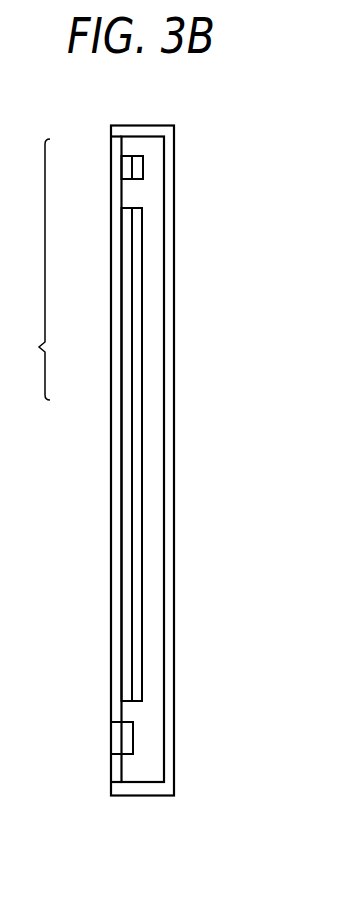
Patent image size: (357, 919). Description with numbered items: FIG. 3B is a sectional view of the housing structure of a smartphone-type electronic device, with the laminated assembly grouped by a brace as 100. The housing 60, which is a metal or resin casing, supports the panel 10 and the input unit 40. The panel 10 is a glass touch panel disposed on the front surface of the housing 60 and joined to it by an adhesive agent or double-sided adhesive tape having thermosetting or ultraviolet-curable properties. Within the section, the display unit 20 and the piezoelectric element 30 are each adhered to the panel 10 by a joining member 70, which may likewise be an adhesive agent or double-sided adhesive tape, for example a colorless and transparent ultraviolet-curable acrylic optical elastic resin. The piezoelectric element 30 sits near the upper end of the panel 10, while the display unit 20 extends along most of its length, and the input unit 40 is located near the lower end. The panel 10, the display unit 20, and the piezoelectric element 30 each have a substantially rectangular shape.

The display device assembly 100 is at (25, 269).
The panel 10 is at (115, 314).
The display unit 20 is at (135, 382).
The piezoelectric element 30 is at (134, 173).
The input unit 40 is at (120, 740).
The housing 60 is at (170, 171).
The joining member 70 is at (126, 160).